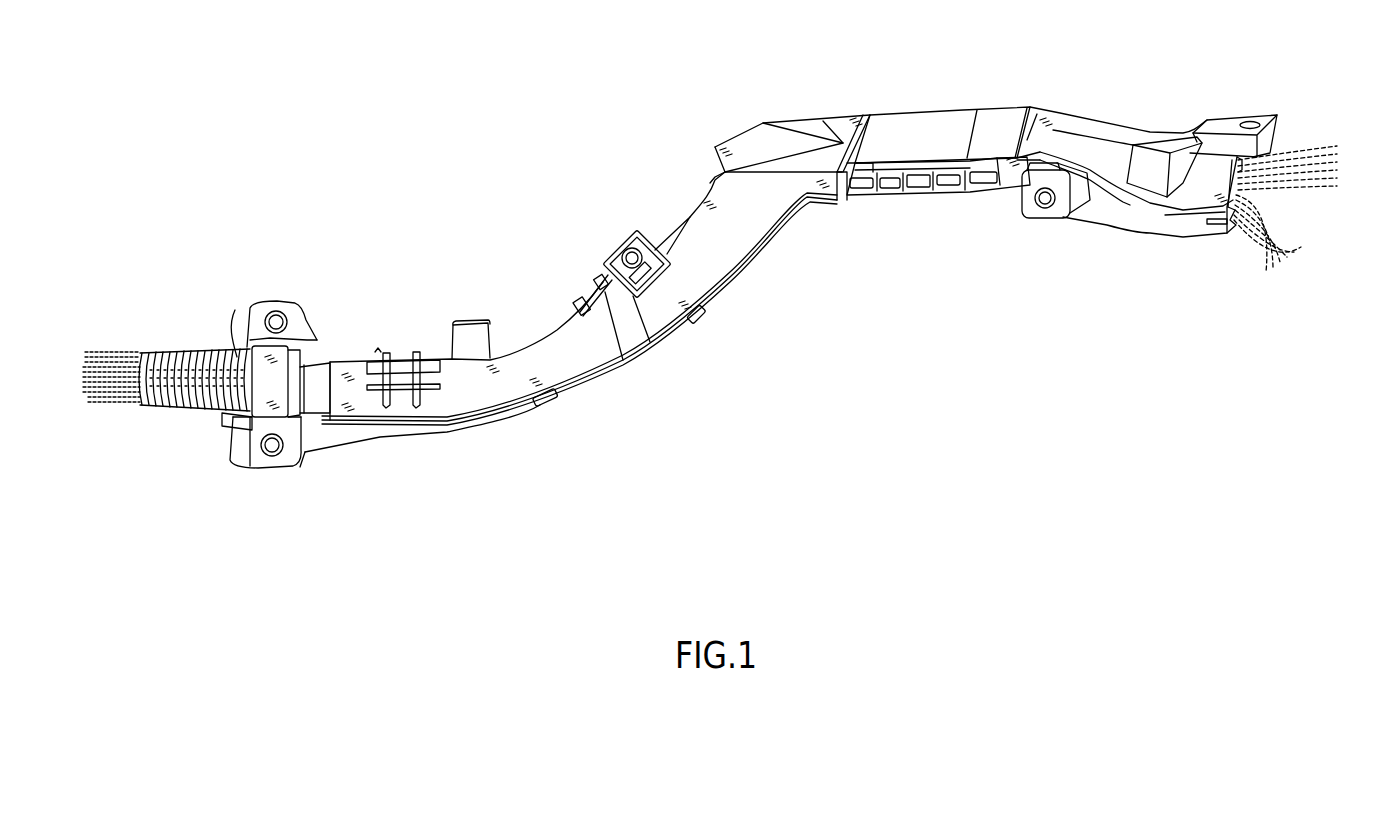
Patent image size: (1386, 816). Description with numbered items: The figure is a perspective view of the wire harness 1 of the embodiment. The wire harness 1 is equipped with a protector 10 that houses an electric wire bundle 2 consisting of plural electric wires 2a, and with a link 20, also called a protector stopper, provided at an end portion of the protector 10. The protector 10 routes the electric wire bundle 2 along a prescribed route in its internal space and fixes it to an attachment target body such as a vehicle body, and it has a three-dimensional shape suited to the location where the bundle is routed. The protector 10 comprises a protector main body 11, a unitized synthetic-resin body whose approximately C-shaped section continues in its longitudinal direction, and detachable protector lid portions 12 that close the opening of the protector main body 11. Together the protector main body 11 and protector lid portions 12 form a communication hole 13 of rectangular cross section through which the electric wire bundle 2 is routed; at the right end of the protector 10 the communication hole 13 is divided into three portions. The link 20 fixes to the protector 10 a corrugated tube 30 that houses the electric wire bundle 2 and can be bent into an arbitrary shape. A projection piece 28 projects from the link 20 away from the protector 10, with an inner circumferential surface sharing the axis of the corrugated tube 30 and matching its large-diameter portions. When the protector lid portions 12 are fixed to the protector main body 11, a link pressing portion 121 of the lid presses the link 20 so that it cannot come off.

The wire harness 1 is at (575, 108).
The electric wire bundle 2 is at (1335, 148).
The electric wires 2a is at (92, 409).
The protector 10 is at (905, 93).
The protector main body 11 is at (925, 200).
The protector lid portions 12 is at (956, 124).
The communication hole 13 is at (1273, 162).
The link 20 is at (213, 422).
The projection piece 28 is at (213, 348).
The corrugated tube 30 is at (183, 343).
The link pressing portion 121 is at (272, 375).